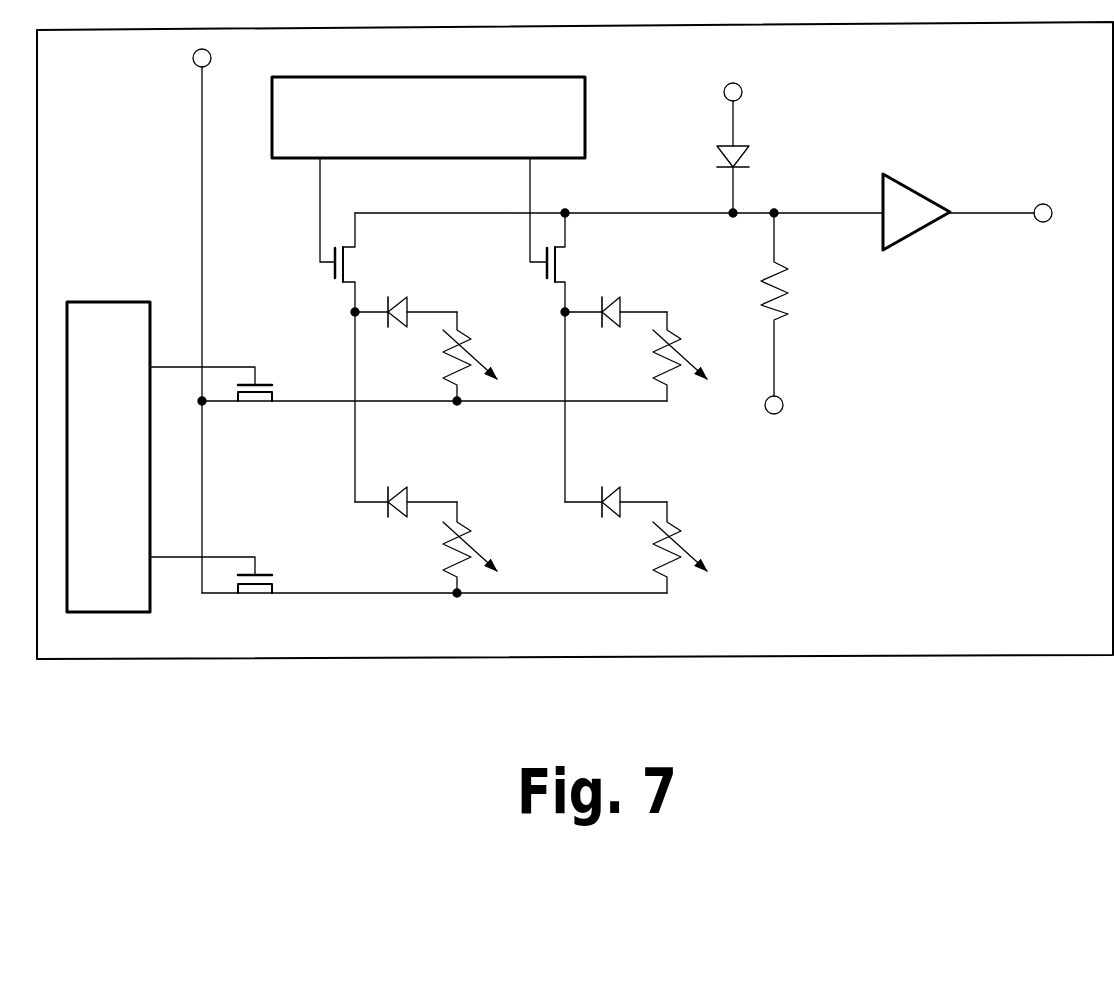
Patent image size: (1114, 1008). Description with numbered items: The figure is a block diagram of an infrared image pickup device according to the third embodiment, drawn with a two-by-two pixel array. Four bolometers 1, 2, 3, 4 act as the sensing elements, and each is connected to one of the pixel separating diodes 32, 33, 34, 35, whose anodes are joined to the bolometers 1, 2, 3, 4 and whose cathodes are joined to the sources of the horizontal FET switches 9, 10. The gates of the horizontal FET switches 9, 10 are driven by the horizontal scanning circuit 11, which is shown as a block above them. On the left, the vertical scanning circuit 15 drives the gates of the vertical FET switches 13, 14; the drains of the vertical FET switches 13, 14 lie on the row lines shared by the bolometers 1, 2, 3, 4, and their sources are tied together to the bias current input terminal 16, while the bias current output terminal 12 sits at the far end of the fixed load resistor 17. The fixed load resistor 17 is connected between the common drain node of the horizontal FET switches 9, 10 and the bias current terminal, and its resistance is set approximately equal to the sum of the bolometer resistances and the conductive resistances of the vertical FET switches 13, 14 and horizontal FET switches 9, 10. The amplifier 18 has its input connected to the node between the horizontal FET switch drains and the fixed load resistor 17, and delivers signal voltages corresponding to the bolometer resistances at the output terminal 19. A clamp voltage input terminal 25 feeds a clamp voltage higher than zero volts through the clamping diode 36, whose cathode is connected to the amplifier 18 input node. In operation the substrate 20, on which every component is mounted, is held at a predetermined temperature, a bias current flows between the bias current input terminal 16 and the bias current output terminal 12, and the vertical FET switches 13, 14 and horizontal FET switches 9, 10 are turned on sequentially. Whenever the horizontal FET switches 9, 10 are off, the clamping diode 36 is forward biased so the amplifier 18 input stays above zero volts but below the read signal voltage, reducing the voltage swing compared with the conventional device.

The bolometer 1 is at (476, 349).
The bolometer 2 is at (686, 349).
The bolometer 3 is at (478, 541).
The bolometer 4 is at (688, 541).
The horizontal FET switch 9 is at (311, 245).
The horizontal FET switch 10 is at (517, 244).
The horizontal scanning circuit 11 is at (586, 150).
The bias current output terminal 12 is at (784, 404).
The vertical FET switch 13 is at (243, 352).
The vertical FET switch 14 is at (243, 548).
The vertical scanning circuit 15 is at (151, 597).
The bias current input terminal 16 is at (192, 58).
The fixed load resistor 17 is at (792, 296).
The amplifier 18 is at (918, 188).
The output terminal 19 is at (1051, 207).
The substrate 20 is at (985, 655).
The clamp voltage input terminal 25 is at (742, 90).
The pixel separating diode 32 is at (410, 298).
The pixel separating diode 33 is at (623, 298).
The pixel separating diode 34 is at (414, 490).
The pixel separating diode 35 is at (624, 490).
The clamping diode 36 is at (758, 157).